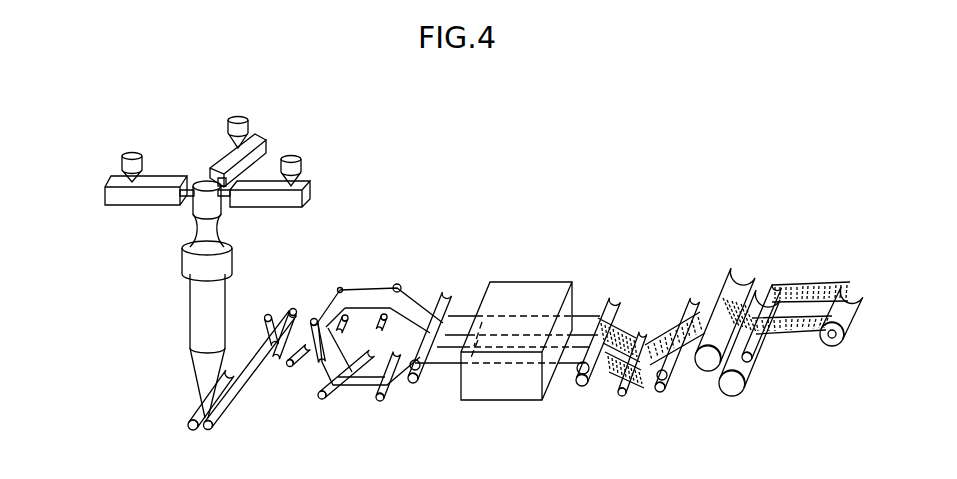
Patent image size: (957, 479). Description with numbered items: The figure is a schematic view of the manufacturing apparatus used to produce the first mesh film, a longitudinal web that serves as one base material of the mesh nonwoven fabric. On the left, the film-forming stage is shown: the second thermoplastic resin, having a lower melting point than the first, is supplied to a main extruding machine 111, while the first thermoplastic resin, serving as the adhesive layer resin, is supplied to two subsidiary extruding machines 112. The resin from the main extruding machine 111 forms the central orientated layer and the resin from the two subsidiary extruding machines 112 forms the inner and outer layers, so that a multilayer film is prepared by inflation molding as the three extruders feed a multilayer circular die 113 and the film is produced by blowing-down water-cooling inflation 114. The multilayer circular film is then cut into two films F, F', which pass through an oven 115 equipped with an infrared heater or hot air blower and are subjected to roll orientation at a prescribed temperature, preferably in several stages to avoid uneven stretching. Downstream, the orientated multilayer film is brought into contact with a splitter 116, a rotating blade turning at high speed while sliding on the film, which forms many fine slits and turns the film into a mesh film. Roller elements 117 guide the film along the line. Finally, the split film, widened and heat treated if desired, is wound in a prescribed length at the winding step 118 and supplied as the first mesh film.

The main extruding machine 111 is at (128, 197).
The subsidiary extruding machine 112 is at (256, 150).
The multilayer circular die 113 is at (205, 182).
The blowing-down water-cooling inflation 114 is at (205, 312).
The oven 115 is at (523, 302).
The splitter (rotating blade) 116 is at (615, 298).
The rollers 117 is at (762, 278).
The winding step 118 is at (827, 345).
The film F is at (320, 327).
The film F' is at (295, 404).